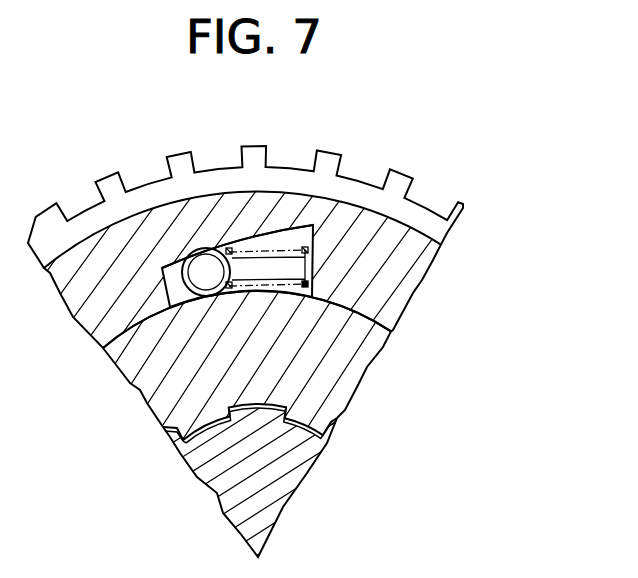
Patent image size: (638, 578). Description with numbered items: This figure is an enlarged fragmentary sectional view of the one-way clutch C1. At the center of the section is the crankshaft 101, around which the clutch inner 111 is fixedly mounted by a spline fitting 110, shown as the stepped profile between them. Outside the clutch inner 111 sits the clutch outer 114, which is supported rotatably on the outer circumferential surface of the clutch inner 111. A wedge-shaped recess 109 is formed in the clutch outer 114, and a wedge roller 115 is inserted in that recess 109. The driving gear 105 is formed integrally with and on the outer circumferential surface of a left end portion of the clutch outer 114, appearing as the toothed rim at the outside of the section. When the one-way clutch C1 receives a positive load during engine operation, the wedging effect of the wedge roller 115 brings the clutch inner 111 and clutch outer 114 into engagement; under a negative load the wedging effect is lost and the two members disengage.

The driving gear 105 is at (410, 185).
The clutch outer 114 is at (424, 264).
The wedge-shaped recess 109 is at (262, 233).
The one-way clutch C1 is at (298, 231).
The wedge roller 115 is at (203, 283).
The clutch inner 111 is at (352, 388).
The spline fitting 110 is at (168, 428).
The crankshaft 101 is at (283, 497).